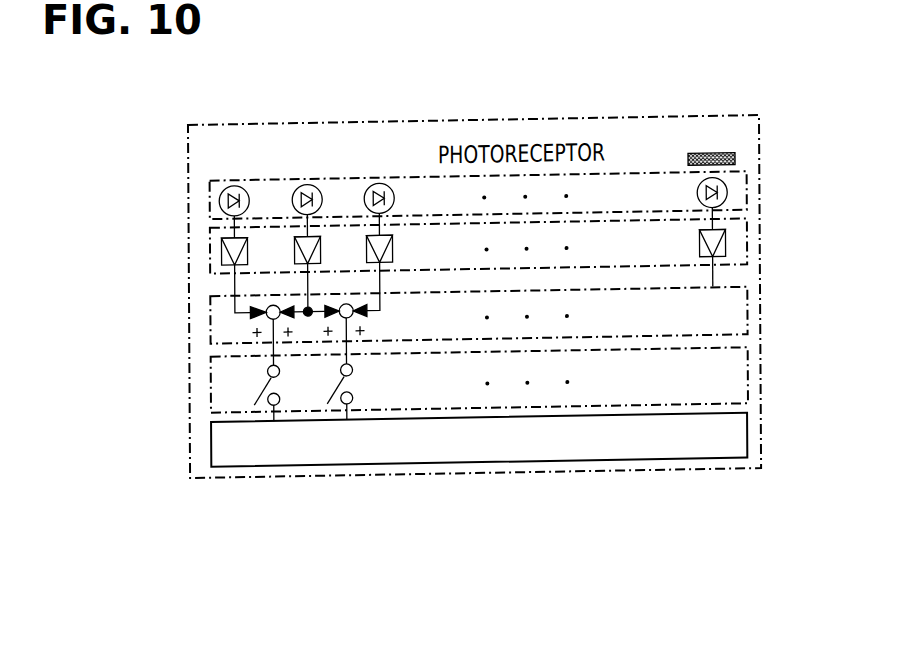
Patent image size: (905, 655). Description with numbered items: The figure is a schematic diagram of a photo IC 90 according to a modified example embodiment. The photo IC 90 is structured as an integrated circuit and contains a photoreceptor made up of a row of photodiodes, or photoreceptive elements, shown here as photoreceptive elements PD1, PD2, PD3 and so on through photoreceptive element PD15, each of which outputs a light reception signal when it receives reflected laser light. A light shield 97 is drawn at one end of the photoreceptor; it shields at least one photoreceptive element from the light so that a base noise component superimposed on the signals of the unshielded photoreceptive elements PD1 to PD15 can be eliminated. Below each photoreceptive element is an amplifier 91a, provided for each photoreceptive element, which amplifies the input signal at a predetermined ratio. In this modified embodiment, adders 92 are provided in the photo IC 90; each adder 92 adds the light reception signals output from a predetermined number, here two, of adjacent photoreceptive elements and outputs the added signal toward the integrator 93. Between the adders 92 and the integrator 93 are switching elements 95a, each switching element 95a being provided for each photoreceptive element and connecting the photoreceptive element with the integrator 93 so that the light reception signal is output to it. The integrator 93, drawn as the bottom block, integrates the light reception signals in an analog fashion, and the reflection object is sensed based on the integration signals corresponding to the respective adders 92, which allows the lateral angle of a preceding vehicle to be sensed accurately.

The photo IC 90 is at (188, 305).
The light shield 97 is at (734, 171).
The photoreceptive element PD1 is at (228, 189).
The photoreceptive element PD2 is at (302, 190).
The photoreceptive element PD3 is at (376, 190).
The photoreceptive element PD15 is at (726, 203).
The amplifier 91a is at (746, 258).
The adder 92 is at (746, 321).
The switching element 95a is at (746, 393).
The integrator 93 is at (745, 446).